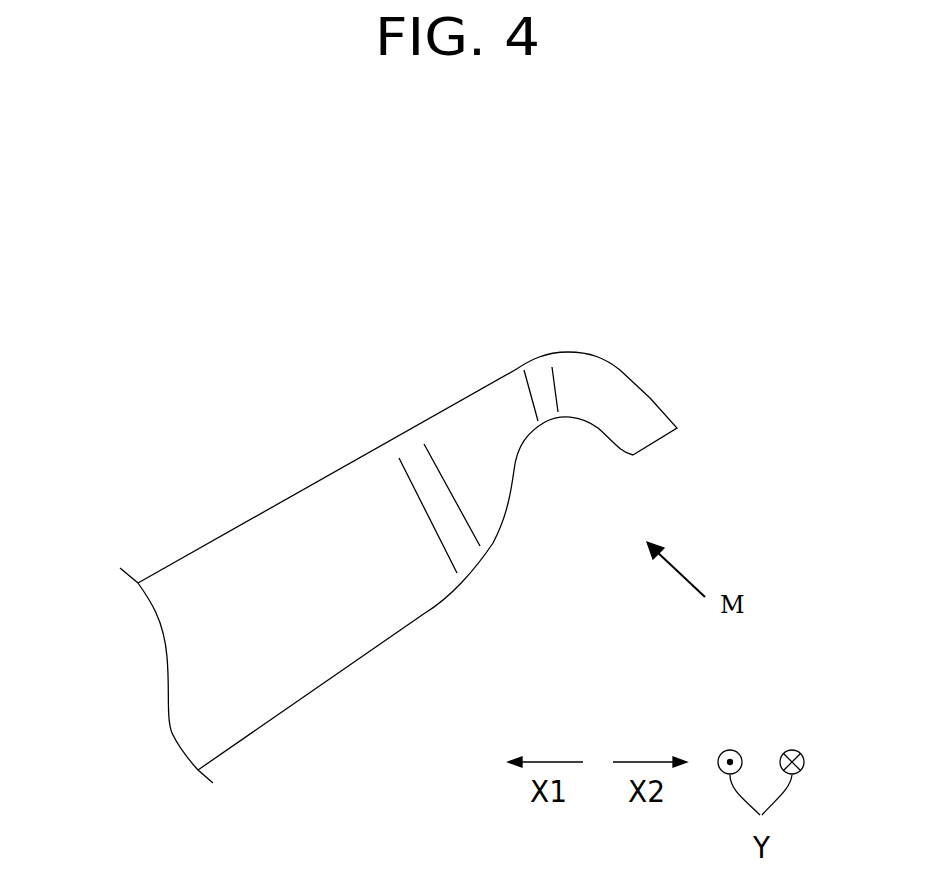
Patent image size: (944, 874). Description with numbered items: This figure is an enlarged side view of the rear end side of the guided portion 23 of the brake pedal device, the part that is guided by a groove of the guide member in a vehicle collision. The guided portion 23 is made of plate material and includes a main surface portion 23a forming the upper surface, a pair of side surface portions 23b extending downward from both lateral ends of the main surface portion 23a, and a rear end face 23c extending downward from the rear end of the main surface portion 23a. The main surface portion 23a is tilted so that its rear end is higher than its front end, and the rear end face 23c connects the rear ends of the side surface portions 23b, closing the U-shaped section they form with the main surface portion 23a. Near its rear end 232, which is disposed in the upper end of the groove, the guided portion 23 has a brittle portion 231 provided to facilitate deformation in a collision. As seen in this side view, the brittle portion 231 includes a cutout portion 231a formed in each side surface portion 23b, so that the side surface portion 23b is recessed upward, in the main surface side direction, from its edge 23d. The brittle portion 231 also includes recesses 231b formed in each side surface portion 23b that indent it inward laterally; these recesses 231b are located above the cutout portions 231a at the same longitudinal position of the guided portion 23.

The guided portion 23 is at (256, 540).
The main surface portion 23a is at (340, 470).
The side surface portion 23b is at (323, 615).
The rear end face 23c is at (650, 392).
The edge 23d is at (425, 613).
The brittle portion 231 is at (522, 356).
The cutout portion 231a is at (543, 437).
The recess 231b is at (473, 437).
The rear end 232 is at (610, 405).